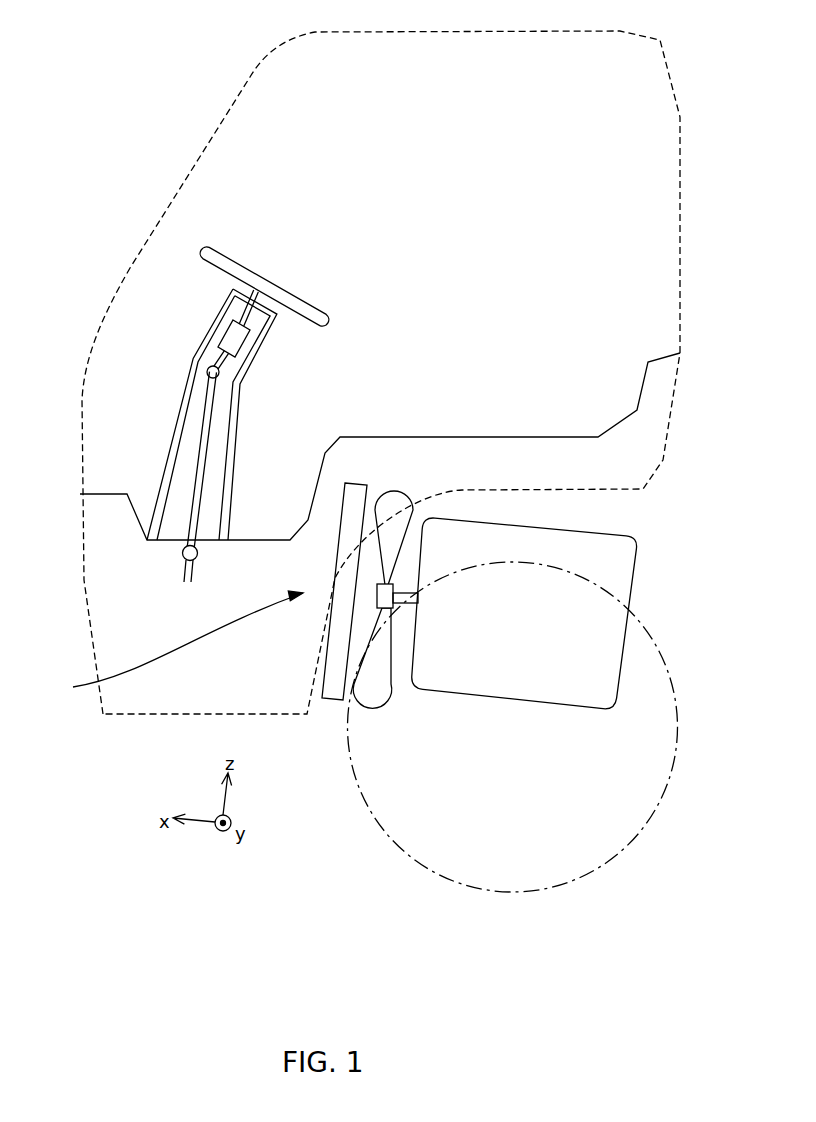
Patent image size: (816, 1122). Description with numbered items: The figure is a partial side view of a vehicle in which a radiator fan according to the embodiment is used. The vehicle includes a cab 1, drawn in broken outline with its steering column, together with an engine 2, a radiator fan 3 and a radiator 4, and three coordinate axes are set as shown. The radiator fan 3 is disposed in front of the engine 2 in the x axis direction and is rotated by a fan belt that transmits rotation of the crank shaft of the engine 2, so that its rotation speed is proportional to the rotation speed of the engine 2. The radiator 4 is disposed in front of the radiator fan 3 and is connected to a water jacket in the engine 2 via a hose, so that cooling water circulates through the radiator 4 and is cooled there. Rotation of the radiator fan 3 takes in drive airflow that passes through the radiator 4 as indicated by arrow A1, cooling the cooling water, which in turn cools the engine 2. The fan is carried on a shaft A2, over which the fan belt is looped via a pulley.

The cab 1 is at (433, 31).
The engine 2 is at (517, 697).
The radiator fan 3 is at (372, 708).
The radiator 4 is at (337, 700).
The arrow A1 is at (169, 646).
The shaft A2 is at (390, 610).